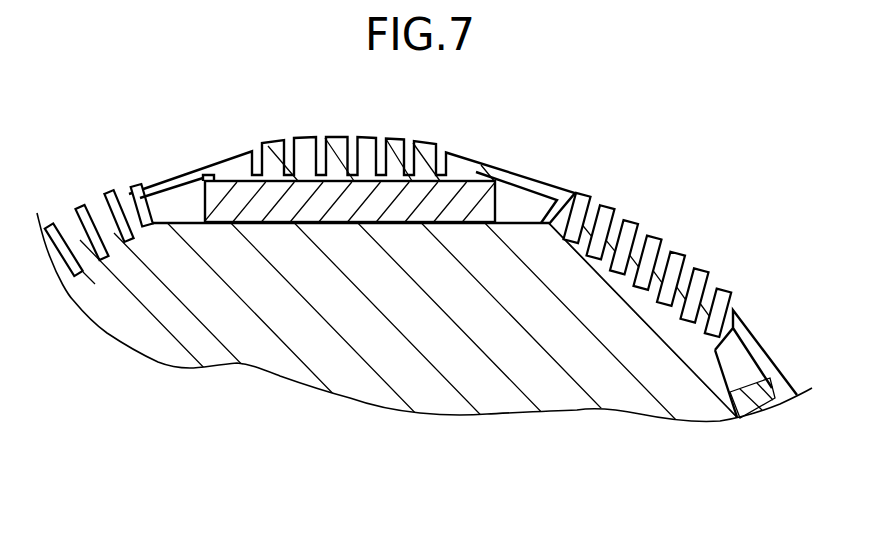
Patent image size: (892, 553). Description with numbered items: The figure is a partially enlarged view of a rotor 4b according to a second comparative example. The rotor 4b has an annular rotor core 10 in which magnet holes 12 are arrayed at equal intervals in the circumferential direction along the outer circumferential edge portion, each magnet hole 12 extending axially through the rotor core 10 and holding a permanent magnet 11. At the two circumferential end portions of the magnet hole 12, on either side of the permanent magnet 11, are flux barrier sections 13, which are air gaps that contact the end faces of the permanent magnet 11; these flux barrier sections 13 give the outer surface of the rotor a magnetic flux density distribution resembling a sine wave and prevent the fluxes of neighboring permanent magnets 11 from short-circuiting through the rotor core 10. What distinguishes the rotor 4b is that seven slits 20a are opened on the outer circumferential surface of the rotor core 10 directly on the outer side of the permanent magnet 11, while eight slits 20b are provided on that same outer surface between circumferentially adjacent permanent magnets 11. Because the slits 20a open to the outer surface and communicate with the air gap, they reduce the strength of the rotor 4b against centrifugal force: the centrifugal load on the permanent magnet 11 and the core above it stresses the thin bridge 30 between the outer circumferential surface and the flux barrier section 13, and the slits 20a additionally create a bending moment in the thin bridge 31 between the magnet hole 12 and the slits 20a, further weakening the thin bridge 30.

The rotor core 10 is at (110, 317).
The permanent magnet 11 is at (465, 200).
The magnet hole 12 is at (223, 223).
The flux barrier section 13 is at (149, 209).
The slit 20a is at (350, 143).
The slit 20b is at (697, 273).
The thin bridge 30 is at (180, 184).
The thin bridge 31 is at (263, 176).
The rotor 4b is at (646, 362).